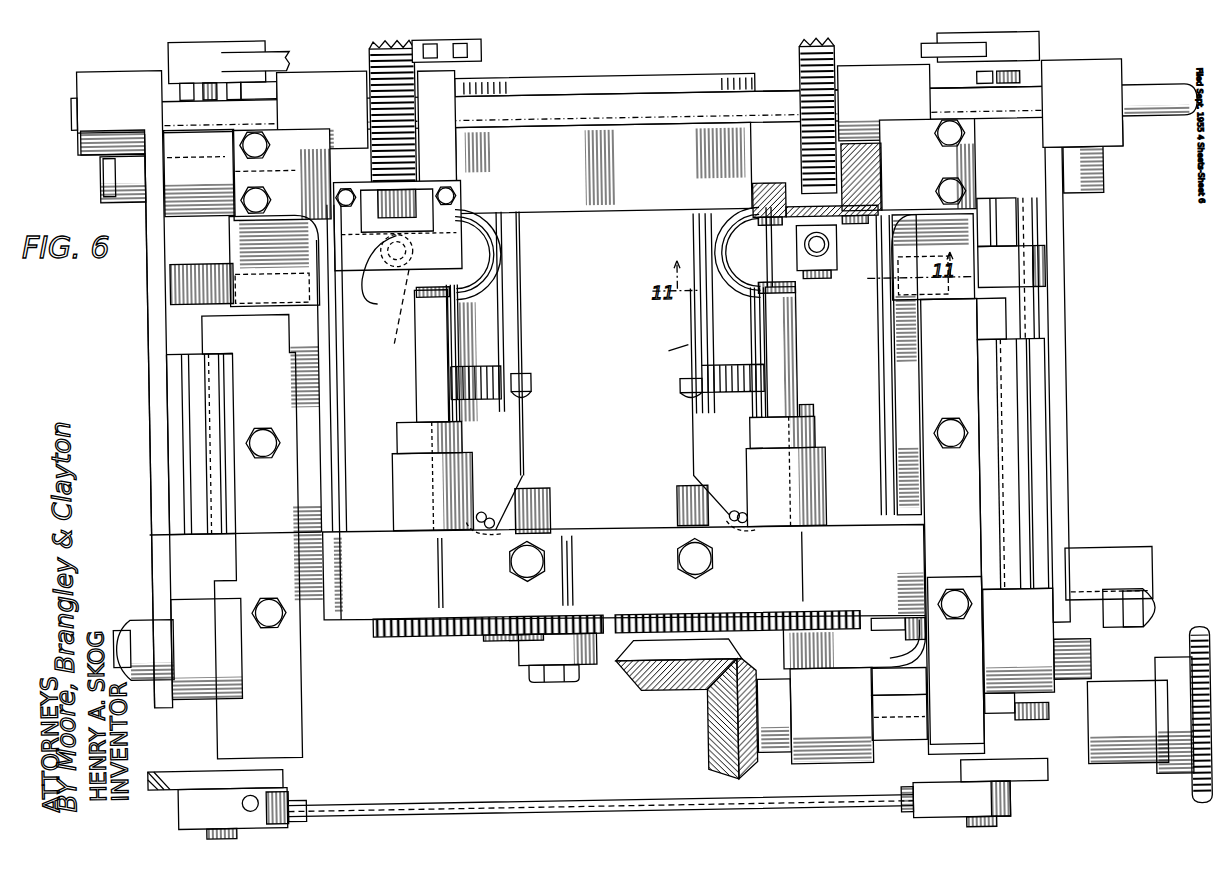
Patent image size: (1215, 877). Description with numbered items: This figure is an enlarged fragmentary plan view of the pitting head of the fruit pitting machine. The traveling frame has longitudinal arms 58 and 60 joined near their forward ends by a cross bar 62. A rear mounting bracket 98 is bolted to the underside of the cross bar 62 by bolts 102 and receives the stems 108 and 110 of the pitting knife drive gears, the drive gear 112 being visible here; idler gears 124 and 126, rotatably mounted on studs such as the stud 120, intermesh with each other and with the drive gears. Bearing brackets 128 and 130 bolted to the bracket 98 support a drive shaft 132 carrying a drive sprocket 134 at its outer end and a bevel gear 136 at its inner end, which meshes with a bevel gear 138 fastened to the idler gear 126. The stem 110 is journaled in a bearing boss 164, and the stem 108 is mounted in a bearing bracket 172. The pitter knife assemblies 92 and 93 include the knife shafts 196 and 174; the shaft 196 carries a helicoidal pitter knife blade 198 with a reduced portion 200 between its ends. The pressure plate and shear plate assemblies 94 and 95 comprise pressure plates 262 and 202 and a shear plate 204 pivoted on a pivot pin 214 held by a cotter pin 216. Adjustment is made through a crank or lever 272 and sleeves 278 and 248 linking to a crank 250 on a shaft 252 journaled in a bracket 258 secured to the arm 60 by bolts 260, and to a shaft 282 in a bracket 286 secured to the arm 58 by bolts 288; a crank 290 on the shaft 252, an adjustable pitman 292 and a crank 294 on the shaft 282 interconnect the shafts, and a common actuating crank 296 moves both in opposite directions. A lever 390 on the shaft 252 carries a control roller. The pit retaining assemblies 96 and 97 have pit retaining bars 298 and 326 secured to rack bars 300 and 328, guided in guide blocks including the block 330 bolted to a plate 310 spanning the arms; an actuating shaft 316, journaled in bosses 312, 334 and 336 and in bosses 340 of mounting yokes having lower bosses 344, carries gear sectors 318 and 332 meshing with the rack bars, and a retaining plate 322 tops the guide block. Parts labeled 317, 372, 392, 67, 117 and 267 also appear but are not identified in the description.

The crank or lever 272 is at (175, 50).
The gear sector 318 is at (382, 72).
The sleeve 278 is at (300, 72).
The bosses of angular mounting yokes 340 is at (90, 135).
The clamp 317 is at (338, 158).
The stop block 392 is at (180, 275).
The rod 372 is at (150, 355).
The shaft 282 is at (200, 420).
The bolts 288 is at (264, 420).
The pressure plate 262 is at (330, 452).
The longitudinal bar portion or arm 58 is at (300, 500).
The bracket 286 is at (260, 525).
The nut 67 is at (118, 615).
The integral bosses 344 is at (150, 672).
The common actuating crank 296 is at (168, 764).
The crank 294 is at (292, 790).
The cross bar 62 is at (348, 615).
The pitting knife drive gear 112 is at (402, 633).
The idler gear 124 is at (506, 633).
The stud 120 is at (556, 669).
The bevel gear 138 is at (665, 691).
The bevel gear 136 is at (704, 735).
The adjustable pitman 292 is at (550, 800).
The bolts 102 is at (527, 567).
The idler gear 126 is at (735, 615).
The bearing bracket 128 is at (820, 767).
The drive shaft 132 is at (902, 745).
The crank 290 is at (1020, 790).
The bearing bracket 130 is at (1115, 768).
The drive sprocket 134 is at (1190, 790).
The rear mounting bracket 98 is at (1085, 556).
The mounting bracket 258 is at (1010, 510).
The shaft 252 is at (1022, 445).
The bolts 260 is at (953, 420).
The pressure plate 202 is at (895, 360).
The longitudinal bar portion or arm 60 is at (900, 490).
The bearing boss 164 is at (805, 460).
The stem 110 is at (812, 425).
The pitter knife shaft 174 is at (798, 356).
The pitter knife mechanism or assembly 93 is at (760, 318).
The pressure plate and shear plate assembly 95 is at (690, 346).
The shear plate 204 is at (696, 438).
The cotter pin 216 is at (722, 505).
The pivot pin 214 is at (748, 524).
The bracket 117 is at (818, 621).
The pit retaining assembly 97 is at (742, 244).
The square pit retaining bar 326 is at (828, 282).
The rack bar 328 is at (760, 200).
The plate or bar 310 is at (608, 204).
The actuating shaft 316 is at (585, 125).
The shaft bearing boss 334 is at (760, 133).
The shaft bearing boss 336 is at (875, 150).
The guide block 330 is at (872, 185).
The sector gear 332 is at (843, 62).
The sleeve 248 is at (928, 55).
The crank 250 is at (1046, 55).
The lever 390 is at (1020, 280).
The boss 312 is at (445, 150).
The retaining plate 322 is at (466, 202).
The pit retaining assembly 96 is at (486, 229).
The helicoidal pitter knife blade 198 is at (505, 248).
The reduced portion 200 is at (497, 278).
The pitter knife mechanism or assembly 92 is at (470, 307).
The pressure plate and shear plate assembly 94 is at (539, 322).
The knife shaft 196 is at (460, 355).
The cup 267 is at (525, 395).
The stem 108 is at (465, 445).
The bearing bracket 172 is at (462, 510).
The T-shaped rack bar 300 is at (385, 262).
The pit retaining square bar 298 is at (389, 317).